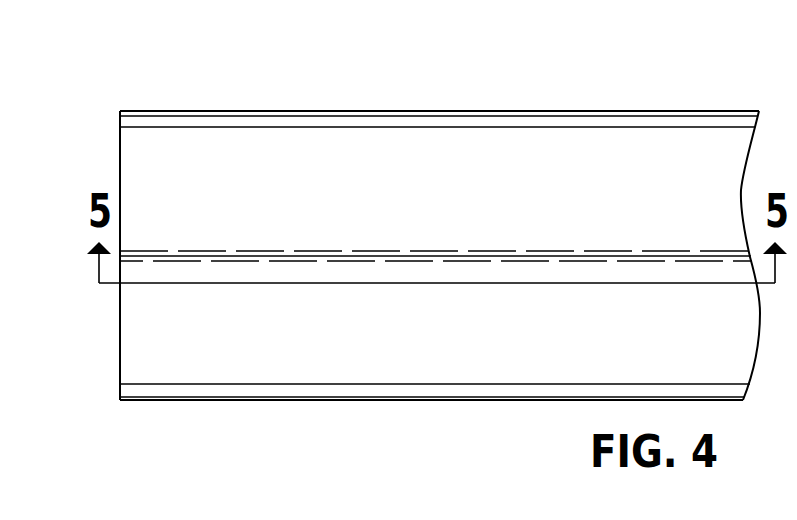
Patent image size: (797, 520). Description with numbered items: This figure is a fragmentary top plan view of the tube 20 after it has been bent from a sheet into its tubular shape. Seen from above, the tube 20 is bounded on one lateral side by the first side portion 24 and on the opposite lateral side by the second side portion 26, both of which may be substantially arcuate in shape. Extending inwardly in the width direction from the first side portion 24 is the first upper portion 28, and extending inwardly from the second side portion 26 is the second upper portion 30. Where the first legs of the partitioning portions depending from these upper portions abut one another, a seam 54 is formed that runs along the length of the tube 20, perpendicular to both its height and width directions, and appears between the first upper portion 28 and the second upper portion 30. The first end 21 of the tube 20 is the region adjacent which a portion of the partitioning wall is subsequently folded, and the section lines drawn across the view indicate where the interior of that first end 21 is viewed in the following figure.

The tube 20 is at (96, 76).
The first end 21 is at (120, 126).
The first side portion 24 is at (328, 111).
The second side portion 26 is at (308, 402).
The first upper portion 28 is at (302, 202).
The second upper portion 30 is at (304, 342).
The seam 54 is at (417, 246).